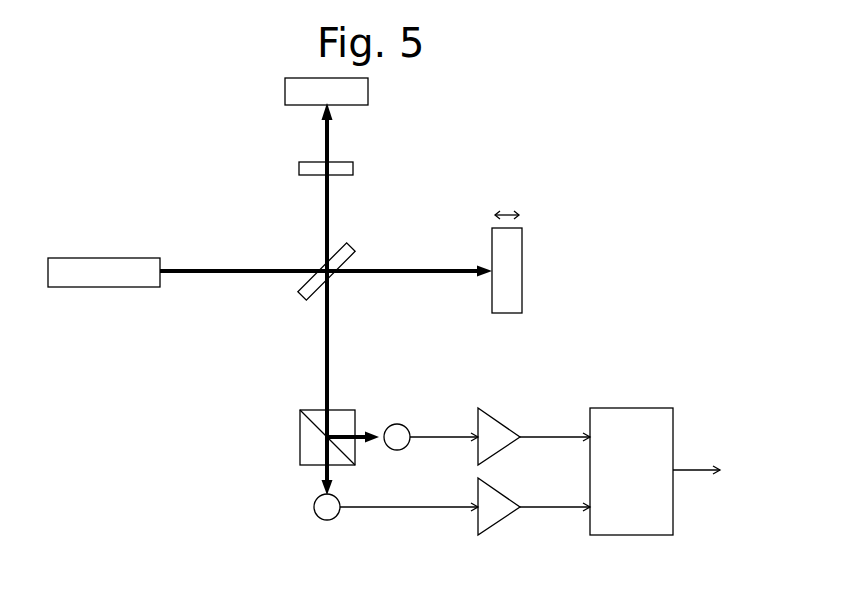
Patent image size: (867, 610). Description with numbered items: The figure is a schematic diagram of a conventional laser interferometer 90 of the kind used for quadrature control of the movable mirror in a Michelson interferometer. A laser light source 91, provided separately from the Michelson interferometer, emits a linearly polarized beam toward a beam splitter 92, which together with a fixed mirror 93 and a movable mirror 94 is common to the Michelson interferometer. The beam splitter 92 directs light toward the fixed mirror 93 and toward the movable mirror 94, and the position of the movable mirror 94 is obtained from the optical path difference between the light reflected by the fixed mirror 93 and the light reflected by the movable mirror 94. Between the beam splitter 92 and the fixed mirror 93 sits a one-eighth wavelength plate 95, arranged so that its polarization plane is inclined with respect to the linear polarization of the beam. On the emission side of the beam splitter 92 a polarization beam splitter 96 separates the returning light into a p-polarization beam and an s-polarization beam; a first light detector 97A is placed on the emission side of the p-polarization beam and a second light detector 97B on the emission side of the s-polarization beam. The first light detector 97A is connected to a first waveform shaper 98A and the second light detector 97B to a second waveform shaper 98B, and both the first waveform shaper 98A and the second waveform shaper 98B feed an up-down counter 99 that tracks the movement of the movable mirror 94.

The laser interferometer 90 is at (158, 439).
The laser light source 91 is at (77, 272).
The beam splitter 92 is at (308, 290).
The fixed mirror 93 is at (353, 92).
The movable mirror 94 is at (505, 298).
The 1/8 wavelength plate 95 is at (353, 170).
The polarization beam splitter 96 is at (307, 435).
The first light detector 97A is at (395, 438).
The second light detector 97B is at (325, 507).
The first waveform shaper 98A is at (497, 435).
The second waveform shaper 98B is at (498, 505).
The up-down counter 99 is at (658, 518).